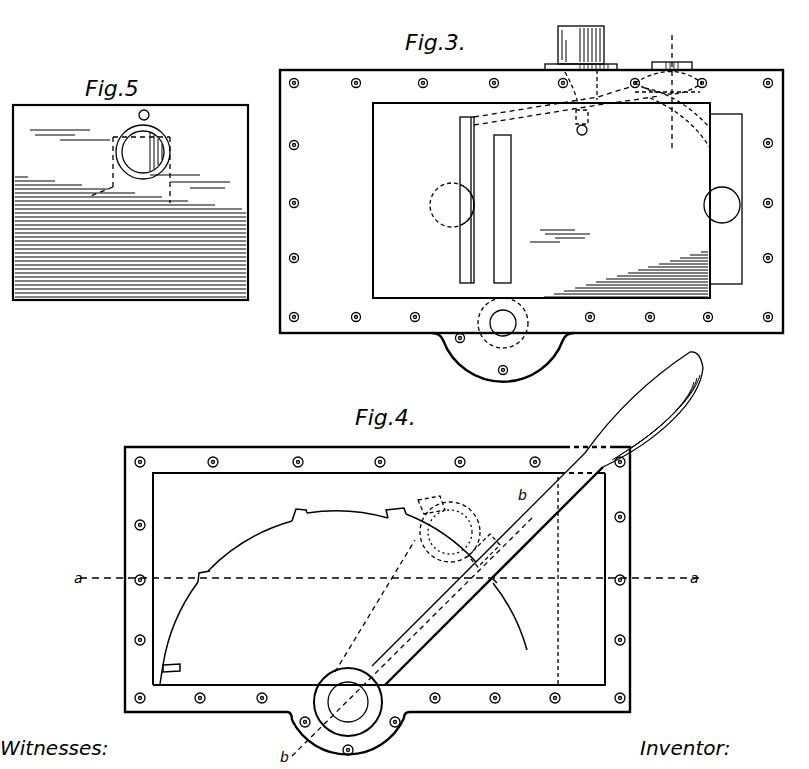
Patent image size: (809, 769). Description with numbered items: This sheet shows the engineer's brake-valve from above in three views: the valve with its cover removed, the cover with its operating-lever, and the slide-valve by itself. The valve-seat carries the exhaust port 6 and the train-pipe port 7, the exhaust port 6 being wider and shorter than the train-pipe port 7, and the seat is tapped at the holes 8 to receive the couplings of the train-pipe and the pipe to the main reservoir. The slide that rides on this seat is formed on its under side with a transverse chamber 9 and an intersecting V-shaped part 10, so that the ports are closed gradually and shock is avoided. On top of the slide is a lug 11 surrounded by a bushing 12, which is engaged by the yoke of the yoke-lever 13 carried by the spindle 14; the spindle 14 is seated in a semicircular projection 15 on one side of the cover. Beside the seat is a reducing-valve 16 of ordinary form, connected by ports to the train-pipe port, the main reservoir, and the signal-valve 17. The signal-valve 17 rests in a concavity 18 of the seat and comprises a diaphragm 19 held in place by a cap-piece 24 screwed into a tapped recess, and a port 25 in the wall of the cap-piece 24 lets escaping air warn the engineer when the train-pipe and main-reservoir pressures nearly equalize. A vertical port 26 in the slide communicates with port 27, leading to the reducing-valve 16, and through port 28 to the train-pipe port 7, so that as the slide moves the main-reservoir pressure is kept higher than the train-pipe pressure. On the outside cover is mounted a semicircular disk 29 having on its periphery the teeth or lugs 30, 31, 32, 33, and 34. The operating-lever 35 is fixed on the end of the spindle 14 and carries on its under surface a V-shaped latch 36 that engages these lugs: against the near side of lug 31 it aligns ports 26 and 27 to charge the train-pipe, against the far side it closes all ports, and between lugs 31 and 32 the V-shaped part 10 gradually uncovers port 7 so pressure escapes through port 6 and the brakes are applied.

In FIG. 3, the exhaust port 6 is at (509, 170).
In FIG. 3, the train-pipe port 7 is at (462, 152).
In FIG. 3, the tapped holes 8 is at (474, 203).
In FIG. 5, the transverse chamber 9 is at (129, 170).
In FIG. 5, the V-shaped part 10 is at (130, 213).
In FIG. 5, the lug 11 is at (160, 143).
In FIG. 5, the bushing 12 is at (120, 152).
In FIG. 4, the yoke-lever 13 is at (375, 606).
In FIG. 4, the spindle 14 is at (348, 702).
In FIG. 3, the semicircular projection 15 is at (516, 323).
In FIG. 4, the semicircular projection 15 is at (348, 736).
In FIG. 3, the reducing-valve 16 is at (592, 27).
In FIG. 3, the signal-valve 17 is at (684, 70).
In FIG. 3, the concavity 18 is at (672, 115).
In FIG. 3, the diaphragm 19 is at (632, 100).
In FIG. 3, the cap-piece 24 is at (660, 62).
In FIG. 3, the port 25 is at (677, 60).
In FIG. 5, the vertical port 26 is at (138, 115).
In FIG. 3, the port 27 is at (576, 134).
In FIG. 3, the port 28 is at (548, 113).
In FIG. 4, the semicircular disk 29 is at (343, 597).
In FIG. 4, the tooth 30 is at (490, 590).
In FIG. 4, the lug 31 is at (431, 529).
In FIG. 4, the lug 32 is at (301, 524).
In FIG. 4, the tooth 33 is at (213, 583).
In FIG. 4, the tooth 34 is at (176, 671).
In FIG. 4, the operating-lever 35 is at (644, 409).
In FIG. 4, the latch 36 is at (487, 569).